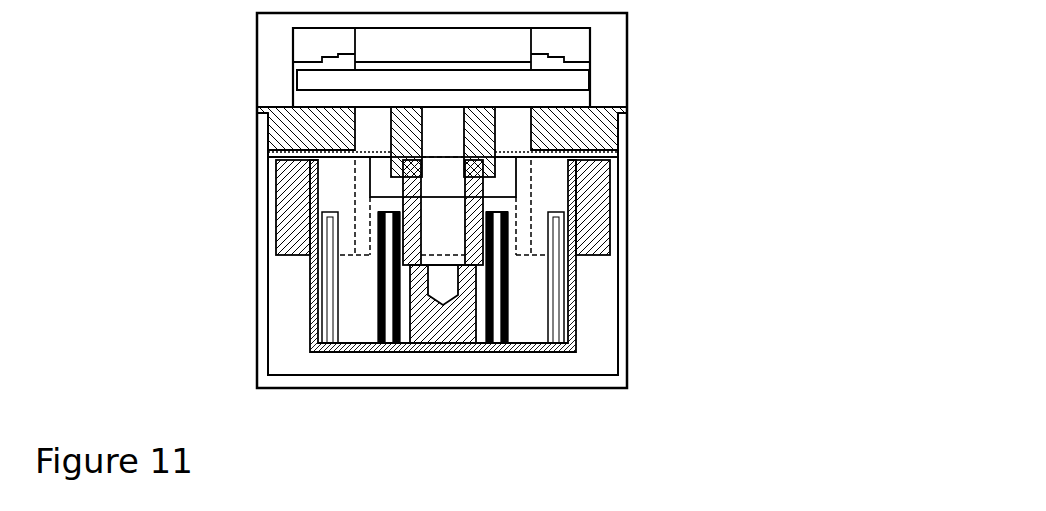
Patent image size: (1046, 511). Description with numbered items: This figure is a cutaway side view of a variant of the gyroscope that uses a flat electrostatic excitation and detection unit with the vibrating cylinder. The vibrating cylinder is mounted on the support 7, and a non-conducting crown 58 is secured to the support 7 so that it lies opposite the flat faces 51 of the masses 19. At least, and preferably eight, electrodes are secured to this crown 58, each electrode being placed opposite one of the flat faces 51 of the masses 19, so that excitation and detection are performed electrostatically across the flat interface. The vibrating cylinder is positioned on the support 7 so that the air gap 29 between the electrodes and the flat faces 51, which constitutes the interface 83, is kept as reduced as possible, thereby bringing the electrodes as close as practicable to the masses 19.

The support 7 is at (555, 138).
The non-conducting crown 58 is at (612, 147).
The flat faces 51 is at (607, 178).
The air gap 29 is at (605, 196).
The masses 19 is at (605, 235).
The interface 83 is at (345, 162).